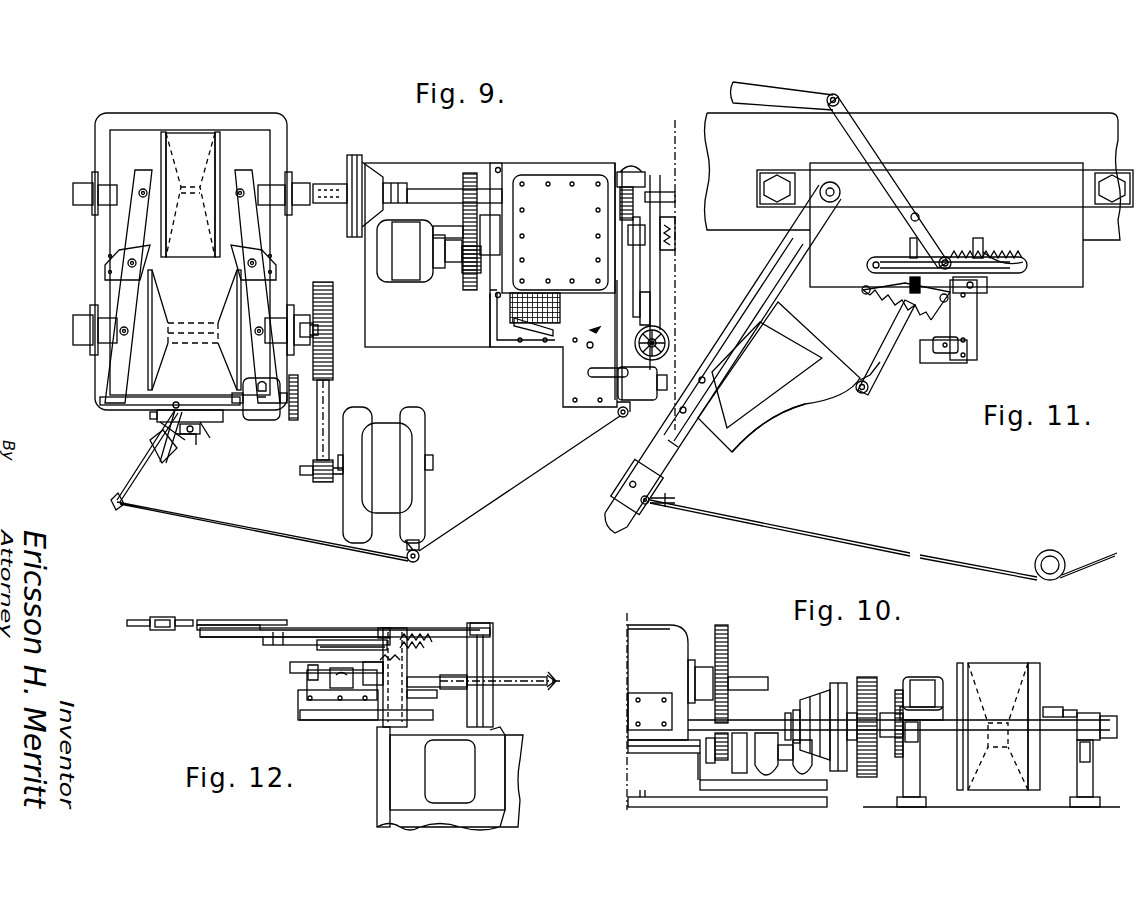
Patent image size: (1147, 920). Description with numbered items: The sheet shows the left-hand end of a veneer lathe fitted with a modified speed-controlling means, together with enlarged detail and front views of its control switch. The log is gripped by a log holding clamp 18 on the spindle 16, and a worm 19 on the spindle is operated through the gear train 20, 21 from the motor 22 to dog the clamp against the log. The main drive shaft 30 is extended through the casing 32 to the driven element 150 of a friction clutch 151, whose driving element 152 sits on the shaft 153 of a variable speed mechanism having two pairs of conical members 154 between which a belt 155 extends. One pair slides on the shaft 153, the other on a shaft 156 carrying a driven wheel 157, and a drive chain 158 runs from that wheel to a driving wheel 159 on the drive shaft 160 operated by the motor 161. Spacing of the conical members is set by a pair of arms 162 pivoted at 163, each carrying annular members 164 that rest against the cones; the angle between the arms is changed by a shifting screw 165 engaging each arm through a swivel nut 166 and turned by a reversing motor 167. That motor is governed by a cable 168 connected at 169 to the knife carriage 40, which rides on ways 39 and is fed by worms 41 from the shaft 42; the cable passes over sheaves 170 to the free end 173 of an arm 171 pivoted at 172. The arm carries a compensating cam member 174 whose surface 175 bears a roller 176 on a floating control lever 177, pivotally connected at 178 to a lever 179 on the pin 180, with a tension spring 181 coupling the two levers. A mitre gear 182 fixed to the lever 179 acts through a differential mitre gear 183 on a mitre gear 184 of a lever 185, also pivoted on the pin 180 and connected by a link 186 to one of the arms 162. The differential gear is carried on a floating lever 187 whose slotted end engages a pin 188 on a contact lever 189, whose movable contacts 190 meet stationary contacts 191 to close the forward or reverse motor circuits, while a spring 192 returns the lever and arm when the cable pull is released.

In FIG. 9, the log rotating spindle 16 is at (640, 240).
In FIG. 9, the log holding clamp 18 is at (676, 245).
In FIG. 9, the worm 19 is at (450, 232).
In FIG. 10, the worm 19 is at (752, 680).
In FIG. 9, the gear train gear 20 is at (471, 172).
In FIG. 10, the gear train gear 20 is at (726, 625).
In FIG. 10, the gear train gear 21 is at (728, 745).
In FIG. 9, the motor 22 is at (402, 265).
In FIG. 10, the motor 22 is at (785, 757).
In FIG. 9, the main drive shaft 30 is at (652, 185).
In FIG. 9, the casing 32 is at (565, 178).
In FIG. 9, the ways 39 is at (655, 307).
In FIG. 9, the knife carriage 40 is at (615, 290).
In FIG. 9, the worm 41 is at (636, 210).
In FIG. 9, the shaft 42 is at (636, 400).
In FIG. 9, the driven element 150 is at (388, 181).
In FIG. 10, the driven element 150 is at (810, 700).
In FIG. 9, the friction clutch 151 is at (352, 153).
In FIG. 10, the friction clutch 151 is at (838, 683).
In FIG. 9, the driving element 152 is at (367, 165).
In FIG. 10, the driving element 152 is at (812, 703).
In FIG. 9, the shaft 153 is at (318, 183).
In FIG. 10, the shaft 153 is at (897, 758).
In FIG. 9, the conical member 154 is at (218, 139).
In FIG. 10, the conical member 154 is at (1040, 670).
In FIG. 9, the belt 155 is at (192, 136).
In FIG. 10, the belt 155 is at (1000, 665).
In FIG. 9, the shaft 156 is at (320, 330).
In FIG. 9, the driven wheel 157 is at (335, 362).
In FIG. 10, the driven wheel 157 is at (885, 672).
In FIG. 9, the drive chain 158 is at (325, 402).
In FIG. 9, the driving wheel 159 is at (326, 484).
In FIG. 9, the drive shaft 160 is at (300, 470).
In FIG. 9, the motor 161 is at (385, 478).
In FIG. 9, the arm 162 is at (130, 240).
In FIG. 10, the arm 162 is at (1080, 712).
In FIG. 9, the pivot point 163 is at (248, 264).
In FIG. 9, the annular member 164 is at (243, 185).
In FIG. 10, the annular member 164 is at (1053, 707).
In FIG. 9, the shifting screw 165 is at (198, 397).
In FIG. 9, the swivel nut 166 is at (108, 415).
In FIG. 9, the reversing fractional horse power motor 167 is at (270, 420).
In FIG. 10, the reversing fractional horse power motor 167 is at (923, 676).
In FIG. 9, the cable 168 is at (530, 490).
In FIG. 11, the cable 168 is at (843, 528).
In FIG. 9, the cable connection 169 is at (615, 297).
In FIG. 9, the sheave 170 is at (615, 418).
In FIG. 11, the sheave 170 is at (1052, 552).
In FIG. 9, the arm 171 is at (128, 482).
In FIG. 11, the arm 171 is at (665, 448).
In FIG. 12, the arm 171 is at (205, 620).
In FIG. 11, the pivot 172 is at (830, 180).
In FIG. 12, the pivot 172 is at (490, 625).
In FIG. 9, the cable connection 173 is at (114, 512).
In FIG. 11, the cable connection 173 is at (653, 493).
In FIG. 12, the cable connection 173 is at (160, 617).
In FIG. 9, the compensating cam member 174 is at (148, 462).
In FIG. 11, the compensating cam member 174 is at (760, 400).
In FIG. 12, the compensating cam member 174 is at (298, 626).
In FIG. 9, the cam surface 175 is at (165, 460).
In FIG. 11, the cam surface 175 is at (783, 412).
In FIG. 12, the cam surface 175 is at (240, 637).
In FIG. 9, the roller 176 is at (190, 446).
In FIG. 11, the roller 176 is at (868, 393).
In FIG. 9, the floating control lever 177 is at (160, 425).
In FIG. 11, the floating control lever 177 is at (888, 365).
In FIG. 11, the pivotal connection 178 is at (925, 258).
In FIG. 12, the pivotal connection 178 is at (385, 627).
In FIG. 11, the lever 179 is at (980, 250).
In FIG. 12, the lever 179 is at (350, 645).
In FIG. 11, the pin 180 is at (948, 256).
In FIG. 12, the pin 180 is at (395, 627).
In FIG. 11, the tension spring 181 is at (880, 300).
In FIG. 12, the mitre gear 182 is at (430, 650).
In FIG. 12, the differential mitre gear 183 is at (305, 663).
In FIG. 12, the mitre gear 184 is at (412, 687).
In FIG. 11, the lever 185 is at (873, 155).
In FIG. 12, the lever 185 is at (492, 700).
In FIG. 11, the link 186 is at (812, 93).
In FIG. 11, the floating lever 187 is at (962, 315).
In FIG. 12, the floating lever 187 is at (318, 676).
In FIG. 12, the pin 188 is at (310, 680).
In FIG. 11, the contact lever 189 is at (980, 298).
In FIG. 12, the contact lever 189 is at (305, 700).
In FIG. 11, the movable contact 190 is at (990, 283).
In FIG. 11, the stationary contact 191 is at (908, 283).
In FIG. 12, the stationary contact 191 is at (348, 722).
In FIG. 11, the spring 192 is at (1020, 256).